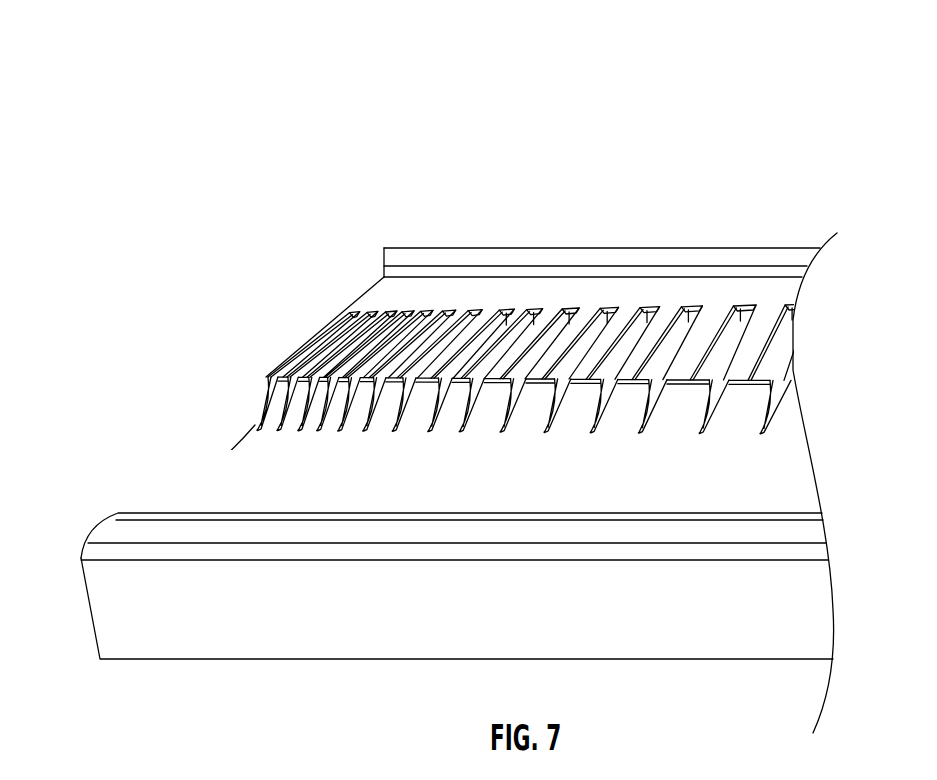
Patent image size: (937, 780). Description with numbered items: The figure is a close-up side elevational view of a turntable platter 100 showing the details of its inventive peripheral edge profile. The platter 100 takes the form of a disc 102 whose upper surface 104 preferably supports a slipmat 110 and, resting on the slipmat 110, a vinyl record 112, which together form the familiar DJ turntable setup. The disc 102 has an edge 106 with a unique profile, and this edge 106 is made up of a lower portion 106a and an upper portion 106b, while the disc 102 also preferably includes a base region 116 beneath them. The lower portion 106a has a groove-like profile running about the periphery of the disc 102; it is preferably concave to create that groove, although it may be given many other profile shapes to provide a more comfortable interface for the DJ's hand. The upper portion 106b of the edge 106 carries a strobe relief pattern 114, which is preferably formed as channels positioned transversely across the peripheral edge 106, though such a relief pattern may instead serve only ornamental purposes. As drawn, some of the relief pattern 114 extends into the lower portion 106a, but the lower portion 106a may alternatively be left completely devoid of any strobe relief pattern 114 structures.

The platter 100 is at (592, 56).
The disc 102 is at (228, 665).
The upper surface 104 is at (680, 267).
The edge 106 is at (152, 322).
The lower portion 106a is at (257, 384).
The upper portion 106b is at (382, 274).
The slipmat 110 is at (545, 273).
The vinyl record 112 is at (478, 258).
The strobe relief pattern 114 is at (613, 302).
The base region 116 is at (115, 611).